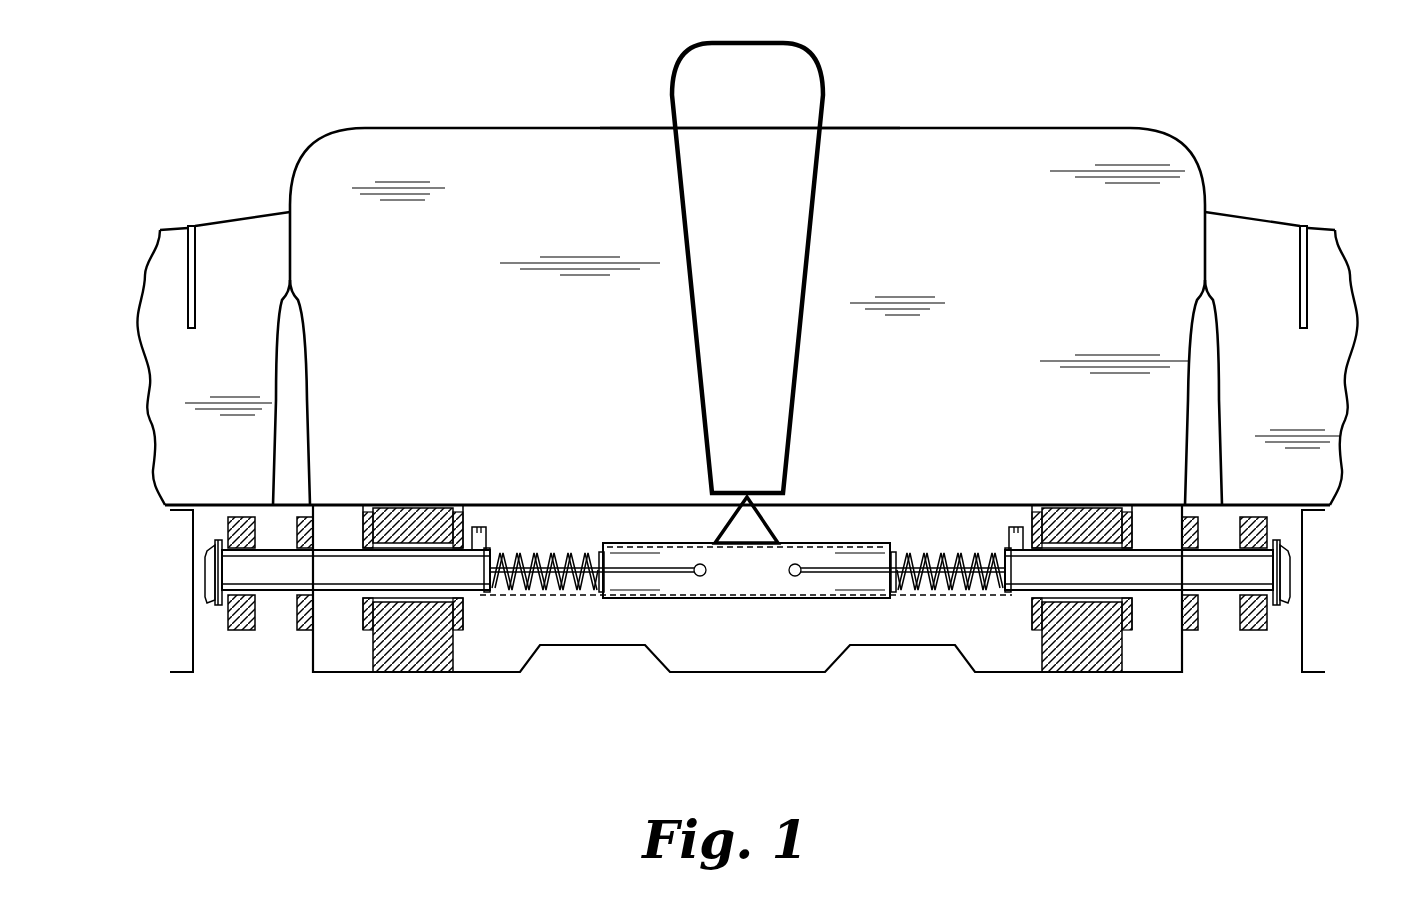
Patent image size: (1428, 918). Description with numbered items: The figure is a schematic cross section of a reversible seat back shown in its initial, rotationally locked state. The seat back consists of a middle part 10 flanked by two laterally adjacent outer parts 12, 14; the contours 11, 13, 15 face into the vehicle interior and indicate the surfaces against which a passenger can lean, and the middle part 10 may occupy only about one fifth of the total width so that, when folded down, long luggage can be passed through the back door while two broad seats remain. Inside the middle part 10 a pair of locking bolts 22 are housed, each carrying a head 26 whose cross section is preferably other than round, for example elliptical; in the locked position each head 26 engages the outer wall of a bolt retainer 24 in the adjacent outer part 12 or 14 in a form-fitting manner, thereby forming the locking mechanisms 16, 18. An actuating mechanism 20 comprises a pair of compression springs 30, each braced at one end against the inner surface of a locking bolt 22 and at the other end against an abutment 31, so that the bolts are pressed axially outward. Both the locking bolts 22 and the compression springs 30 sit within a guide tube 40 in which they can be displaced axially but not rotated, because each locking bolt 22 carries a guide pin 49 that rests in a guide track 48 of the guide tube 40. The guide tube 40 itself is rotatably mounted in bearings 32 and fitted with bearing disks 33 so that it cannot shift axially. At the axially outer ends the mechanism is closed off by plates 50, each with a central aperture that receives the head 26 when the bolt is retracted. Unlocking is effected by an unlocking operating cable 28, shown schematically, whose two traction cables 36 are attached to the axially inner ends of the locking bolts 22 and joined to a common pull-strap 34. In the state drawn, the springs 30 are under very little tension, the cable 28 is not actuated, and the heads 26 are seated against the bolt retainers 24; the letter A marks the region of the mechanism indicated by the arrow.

The middle part 10 is at (1010, 309).
The contour 11 is at (487, 128).
The outer part 12 is at (1318, 373).
The contour 13 is at (1258, 212).
The outer part 14 is at (177, 375).
The contour 15 is at (237, 212).
The locking mechanism 16 is at (1257, 640).
The locking mechanism 18 is at (238, 640).
The actuating mechanism 20 is at (808, 460).
The locking bolt 22 is at (277, 591).
The bolt retainer 24 is at (230, 625).
The head 26 is at (210, 572).
The unlocking operating cable 28 is at (712, 520).
The compression spring 30 is at (547, 592).
The abutment 31 is at (580, 592).
The bearing 32 is at (395, 512).
The bearing disk 33 is at (362, 617).
The pull-strap 34 is at (807, 267).
The traction cable 36 is at (630, 560).
The guide tube 40 is at (737, 600).
The guide track 48 is at (602, 547).
The guide pin 49 is at (478, 528).
The plate 50 is at (312, 625).
The direction of movement A is at (500, 385).